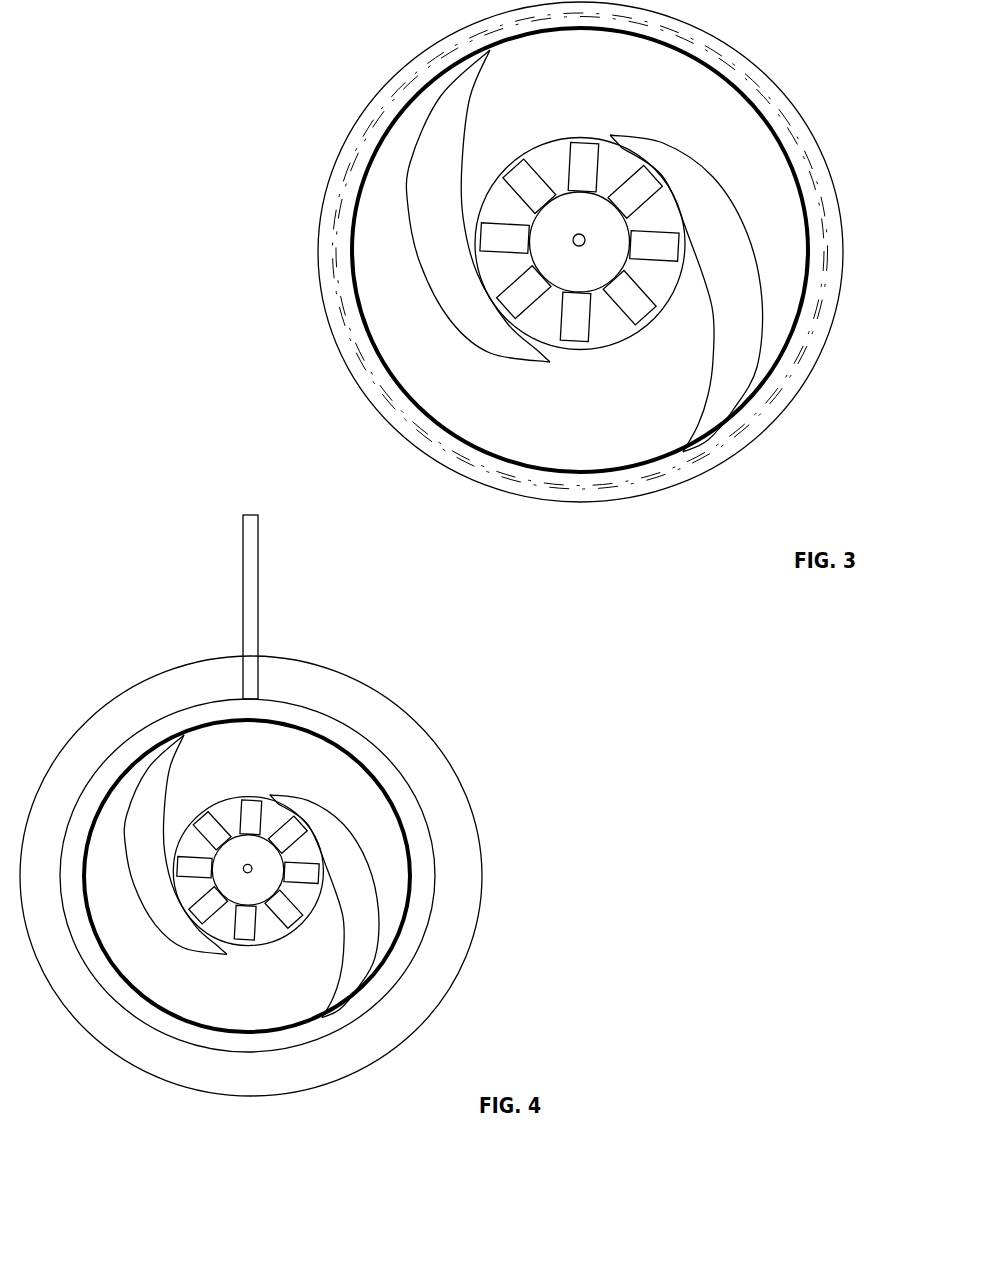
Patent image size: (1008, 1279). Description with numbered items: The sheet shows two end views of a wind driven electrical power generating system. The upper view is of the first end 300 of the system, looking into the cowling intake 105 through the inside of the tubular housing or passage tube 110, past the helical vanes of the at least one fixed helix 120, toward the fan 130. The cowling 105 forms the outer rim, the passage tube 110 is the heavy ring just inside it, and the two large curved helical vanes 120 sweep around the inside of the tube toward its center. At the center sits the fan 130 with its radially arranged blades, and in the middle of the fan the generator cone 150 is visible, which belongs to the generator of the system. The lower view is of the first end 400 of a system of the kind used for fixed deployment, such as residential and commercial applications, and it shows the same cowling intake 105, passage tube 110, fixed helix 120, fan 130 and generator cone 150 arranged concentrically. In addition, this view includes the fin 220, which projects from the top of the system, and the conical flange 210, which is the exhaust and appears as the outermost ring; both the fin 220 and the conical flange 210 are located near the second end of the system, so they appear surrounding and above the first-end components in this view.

In FIG. 3, the cowling intake 105 is at (816, 313).
In FIG. 4, the cowling intake 105 is at (417, 907).
In FIG. 3, the passage tube 110 is at (768, 202).
In FIG. 4, the passage tube 110 is at (383, 843).
In FIG. 3, the fixed helix 120 is at (458, 290).
In FIG. 4, the fixed helix 120 is at (160, 907).
In FIG. 3, the fan 130 is at (584, 330).
In FIG. 4, the fan 130 is at (250, 935).
In FIG. 3, the generator cone 150 is at (597, 253).
In FIG. 4, the generator cone 150 is at (255, 880).
In FIG. 4, the conical flange 210 is at (412, 743).
In FIG. 4, the fin 220 is at (251, 632).
In FIG. 3, the first end 300 is at (533, 277).
In FIG. 4, the first end 400 is at (279, 786).